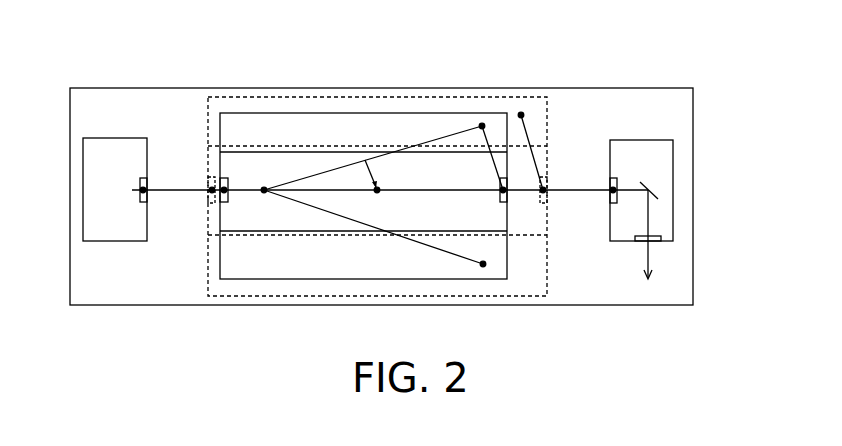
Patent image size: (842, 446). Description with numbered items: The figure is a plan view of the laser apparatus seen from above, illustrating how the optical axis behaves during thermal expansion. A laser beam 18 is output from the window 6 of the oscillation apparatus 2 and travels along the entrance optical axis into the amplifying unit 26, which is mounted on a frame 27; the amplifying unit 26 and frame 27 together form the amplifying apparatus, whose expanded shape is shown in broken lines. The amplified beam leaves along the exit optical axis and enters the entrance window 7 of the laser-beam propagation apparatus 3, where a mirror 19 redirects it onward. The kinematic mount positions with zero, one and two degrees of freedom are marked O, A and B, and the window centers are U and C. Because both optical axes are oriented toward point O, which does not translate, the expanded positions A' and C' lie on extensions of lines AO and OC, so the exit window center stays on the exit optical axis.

The oscillation apparatus 2 is at (113, 138).
The window of oscillation apparatus 6 is at (143, 190).
The laser beam 18 is at (180, 188).
The frame 27 is at (270, 120).
The amplifying unit 26 is at (318, 162).
The laser-beam propagation apparatus 3 is at (668, 140).
The entrance window of laser-beam propagation apparatus 7 is at (612, 178).
The mirror 19 is at (655, 192).